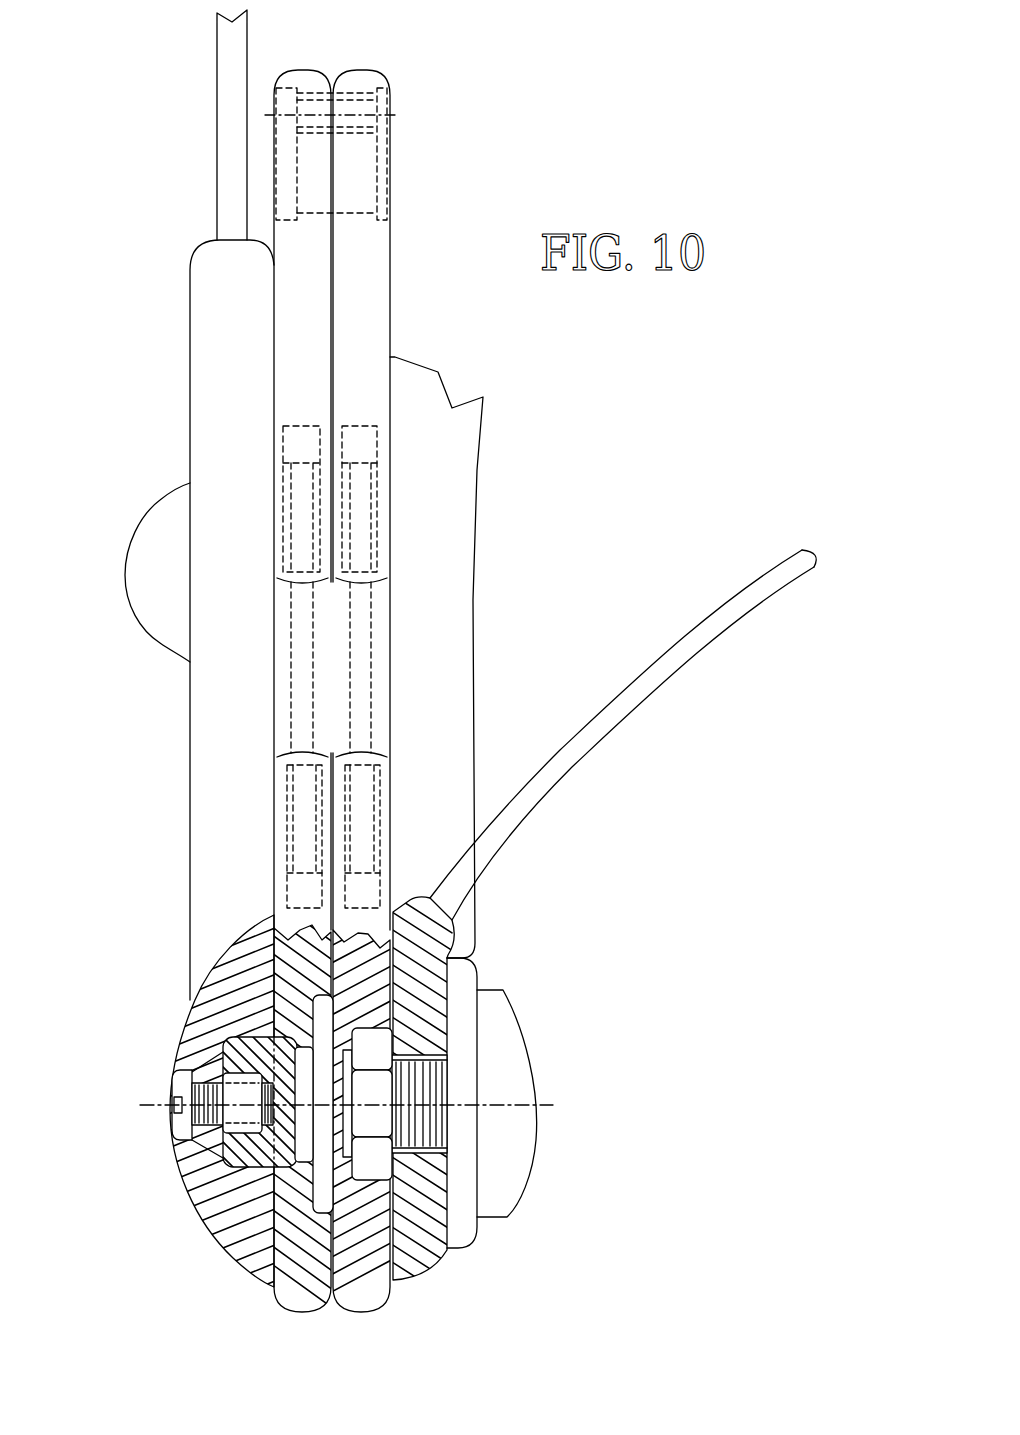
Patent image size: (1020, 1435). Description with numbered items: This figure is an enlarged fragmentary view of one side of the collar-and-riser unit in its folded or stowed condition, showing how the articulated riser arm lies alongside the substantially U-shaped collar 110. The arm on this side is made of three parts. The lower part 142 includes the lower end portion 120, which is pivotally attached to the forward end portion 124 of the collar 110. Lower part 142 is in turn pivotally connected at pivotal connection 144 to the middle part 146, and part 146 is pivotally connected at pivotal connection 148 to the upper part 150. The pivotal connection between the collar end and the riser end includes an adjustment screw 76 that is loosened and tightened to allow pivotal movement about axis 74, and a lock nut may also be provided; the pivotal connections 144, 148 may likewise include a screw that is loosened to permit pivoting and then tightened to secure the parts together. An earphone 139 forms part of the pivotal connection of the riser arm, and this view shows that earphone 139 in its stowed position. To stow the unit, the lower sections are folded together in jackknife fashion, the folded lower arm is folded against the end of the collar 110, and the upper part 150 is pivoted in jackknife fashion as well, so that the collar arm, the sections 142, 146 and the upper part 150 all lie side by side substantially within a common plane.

The collar 110 is at (448, 658).
The lower part 142 is at (375, 720).
The pivotal connection 144 is at (390, 110).
The part 146 is at (292, 355).
The part 150 is at (225, 825).
The lower end portion 120 is at (368, 1217).
The forward end portion 124 is at (430, 1177).
The axis 74 is at (492, 1103).
The adjustment screw 76 is at (498, 1050).
The pivotal connection 148 is at (192, 1115).
The earphone 139 is at (323, 1123).